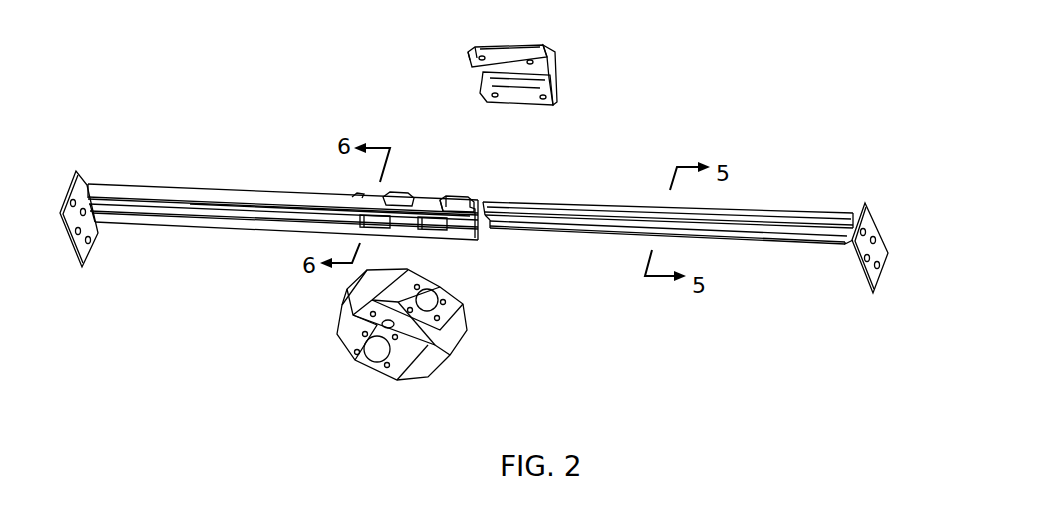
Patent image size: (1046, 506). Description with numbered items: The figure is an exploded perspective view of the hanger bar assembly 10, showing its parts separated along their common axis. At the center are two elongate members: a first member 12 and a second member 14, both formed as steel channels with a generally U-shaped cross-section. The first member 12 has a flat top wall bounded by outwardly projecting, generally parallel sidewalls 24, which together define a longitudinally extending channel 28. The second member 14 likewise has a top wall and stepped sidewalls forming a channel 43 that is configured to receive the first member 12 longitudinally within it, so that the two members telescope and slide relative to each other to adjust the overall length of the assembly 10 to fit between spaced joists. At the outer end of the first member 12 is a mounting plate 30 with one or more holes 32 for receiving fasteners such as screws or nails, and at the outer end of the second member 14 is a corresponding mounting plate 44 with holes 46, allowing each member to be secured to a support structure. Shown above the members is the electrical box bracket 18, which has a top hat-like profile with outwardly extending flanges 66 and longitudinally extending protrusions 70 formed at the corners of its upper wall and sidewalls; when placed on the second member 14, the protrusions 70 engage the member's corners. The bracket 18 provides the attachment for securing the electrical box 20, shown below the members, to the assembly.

The hanger bar assembly 10 is at (271, 128).
The first member 12 is at (594, 204).
The second member 14 is at (197, 187).
The electrical box bracket 18 is at (521, 59).
The electrical box 20 is at (467, 337).
The sidewalls 24 is at (528, 207).
The channel 28 is at (577, 222).
The mounting plate 30 is at (873, 273).
The holes 32 is at (876, 240).
The channel 43 is at (190, 213).
The mounting plate 44 is at (80, 250).
The holes 46 is at (92, 240).
The flanges 66 is at (468, 57).
The protrusions 70 is at (555, 86).